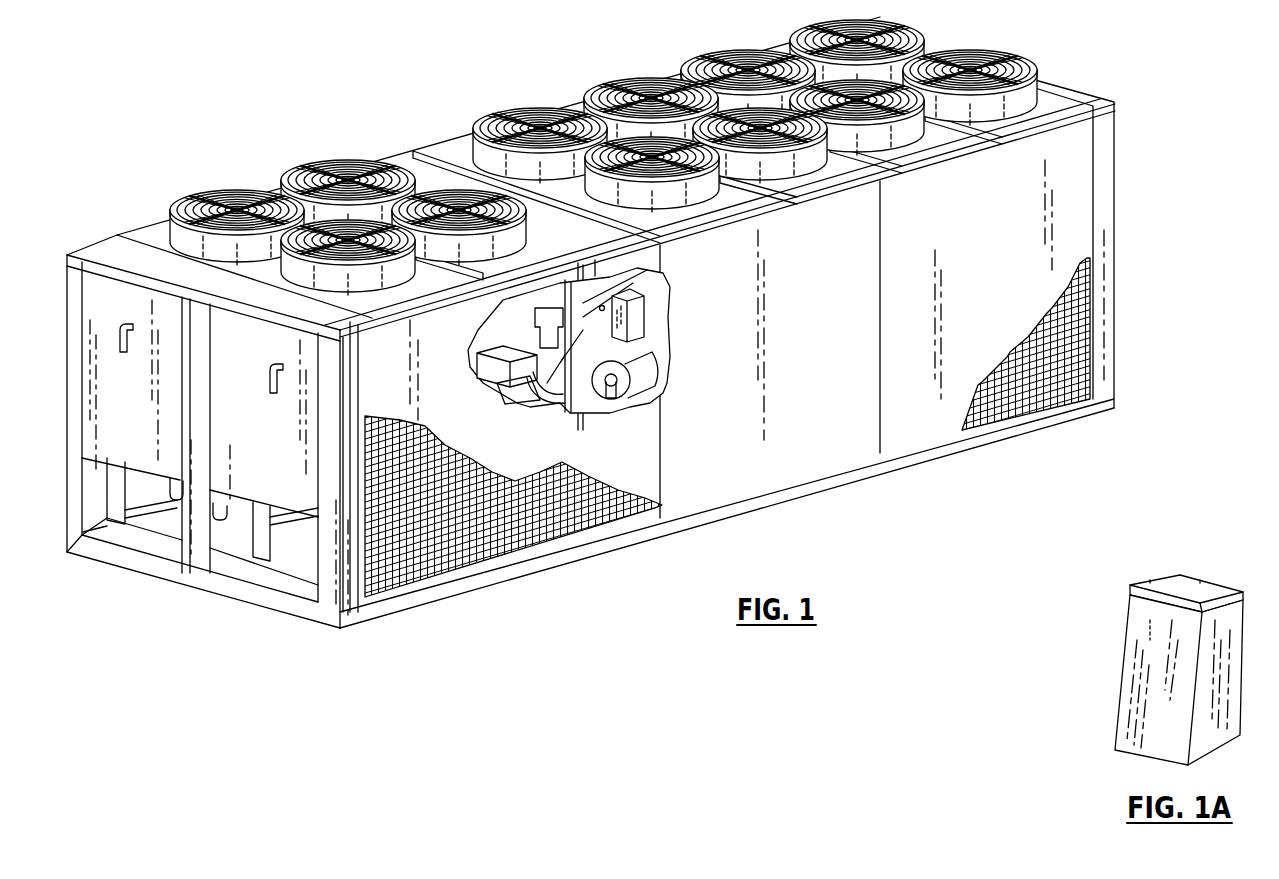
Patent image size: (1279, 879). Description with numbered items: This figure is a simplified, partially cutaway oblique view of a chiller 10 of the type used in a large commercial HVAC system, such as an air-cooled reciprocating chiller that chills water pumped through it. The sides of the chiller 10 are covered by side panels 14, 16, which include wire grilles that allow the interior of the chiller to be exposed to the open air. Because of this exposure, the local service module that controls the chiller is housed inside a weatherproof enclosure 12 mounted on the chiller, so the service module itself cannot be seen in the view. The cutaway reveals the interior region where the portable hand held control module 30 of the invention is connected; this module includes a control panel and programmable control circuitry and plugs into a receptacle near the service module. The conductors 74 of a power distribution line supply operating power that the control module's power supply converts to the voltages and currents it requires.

In FIG. 1, the chiller 10 is at (591, 322).
In FIG. 1, the weatherproof enclosure 12 is at (645, 312).
In FIG. 1A, the weatherproof enclosure 12 is at (1095, 685).
In FIG. 1, the side panel 14 is at (452, 545).
In FIG. 1, the side panel 16 is at (630, 522).
In FIG. 1, the portable control module 30 is at (577, 340).
In FIG. 1, the conductors of a power distribution line 74 is at (632, 374).